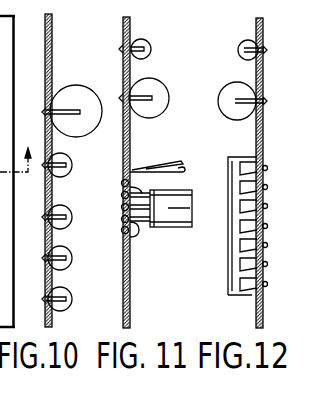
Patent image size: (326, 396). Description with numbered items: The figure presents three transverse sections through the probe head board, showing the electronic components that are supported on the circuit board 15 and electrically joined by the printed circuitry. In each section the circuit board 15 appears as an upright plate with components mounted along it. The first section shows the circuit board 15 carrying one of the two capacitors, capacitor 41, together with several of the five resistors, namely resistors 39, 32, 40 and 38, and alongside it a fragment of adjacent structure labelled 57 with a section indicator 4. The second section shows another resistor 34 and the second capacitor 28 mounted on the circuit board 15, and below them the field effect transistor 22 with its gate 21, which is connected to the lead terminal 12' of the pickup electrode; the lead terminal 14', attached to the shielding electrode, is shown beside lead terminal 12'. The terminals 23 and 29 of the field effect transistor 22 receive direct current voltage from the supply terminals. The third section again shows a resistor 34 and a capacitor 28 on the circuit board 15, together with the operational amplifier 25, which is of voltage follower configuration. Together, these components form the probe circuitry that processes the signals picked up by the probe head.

In FIG. 10, the section line 4 is at (16, 175).
In FIG. 10, the housing frame 57 is at (7, 171).
In FIG. 10, the circuit board 15 is at (52, 33).
In FIG. 11, the circuit board 15 is at (131, 300).
In FIG. 12, the circuit board 15 is at (256, 318).
In FIG. 10, the capacitor 41 is at (78, 86).
In FIG. 10, the resistor 39 is at (74, 163).
In FIG. 10, the resistor 32 is at (72, 213).
In FIG. 10, the resistor 40 is at (70, 251).
In FIG. 10, the resistor 38 is at (71, 294).
In FIG. 11, the resistor 34 is at (138, 40).
In FIG. 12, the resistor 34 is at (242, 40).
In FIG. 11, the capacitor 28 is at (153, 80).
In FIG. 12, the capacitor 28 is at (225, 86).
In FIG. 11, the lead terminal 14' is at (157, 155).
In FIG. 11, the lead terminal 12' is at (172, 174).
In FIG. 11, the terminal 23 is at (121, 186).
In FIG. 11, the terminal 29 is at (121, 200).
In FIG. 11, the gate 21 is at (122, 234).
In FIG. 11, the field effect transistor 22 is at (172, 228).
In FIG. 12, the operational amplifier 25 is at (228, 157).